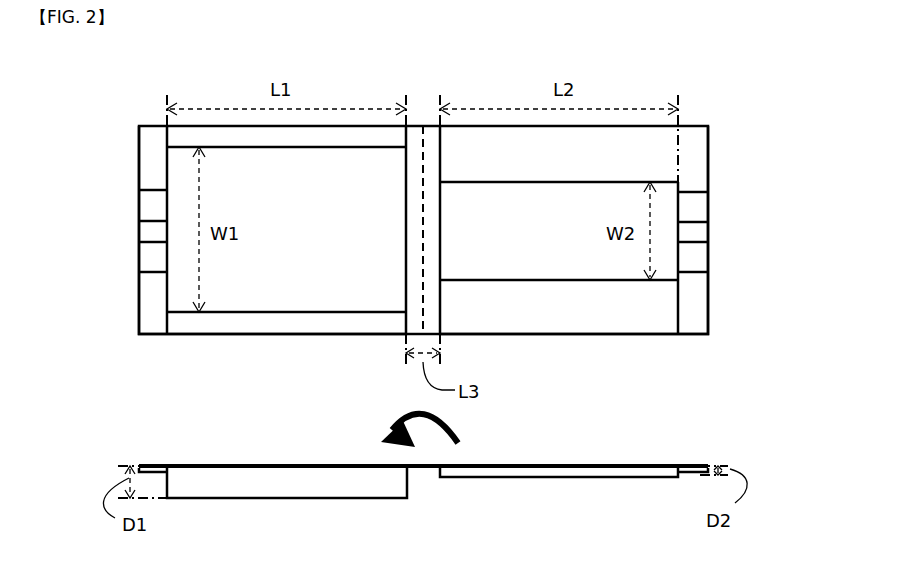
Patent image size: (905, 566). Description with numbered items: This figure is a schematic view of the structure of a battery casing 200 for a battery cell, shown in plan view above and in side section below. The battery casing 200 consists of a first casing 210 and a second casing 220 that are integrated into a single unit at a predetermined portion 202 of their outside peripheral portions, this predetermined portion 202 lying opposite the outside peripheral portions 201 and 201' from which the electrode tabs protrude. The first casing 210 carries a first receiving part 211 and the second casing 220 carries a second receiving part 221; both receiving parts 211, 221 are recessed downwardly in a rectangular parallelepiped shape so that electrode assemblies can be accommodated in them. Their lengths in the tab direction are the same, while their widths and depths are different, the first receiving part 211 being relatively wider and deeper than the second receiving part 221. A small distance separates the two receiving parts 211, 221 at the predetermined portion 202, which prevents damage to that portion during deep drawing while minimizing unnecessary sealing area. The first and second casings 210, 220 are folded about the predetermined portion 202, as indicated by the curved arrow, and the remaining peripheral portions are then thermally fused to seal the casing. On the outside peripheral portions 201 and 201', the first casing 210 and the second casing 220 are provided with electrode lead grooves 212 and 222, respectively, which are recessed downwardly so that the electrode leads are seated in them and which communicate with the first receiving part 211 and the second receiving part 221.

The battery casing 200 is at (92, 84).
The first casing 210 is at (112, 111).
The second casing 220 is at (729, 107).
The outside peripheral portion 201 is at (125, 230).
The outside peripheral portion 201' is at (722, 248).
The predetermined portion 202 is at (423, 127).
The first receiving part 211 is at (302, 281).
The electrode lead groove 212 is at (150, 260).
The second receiving part 221 is at (541, 258).
The electrode lead groove 222 is at (697, 258).